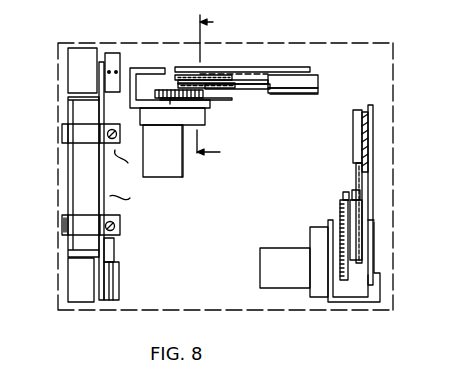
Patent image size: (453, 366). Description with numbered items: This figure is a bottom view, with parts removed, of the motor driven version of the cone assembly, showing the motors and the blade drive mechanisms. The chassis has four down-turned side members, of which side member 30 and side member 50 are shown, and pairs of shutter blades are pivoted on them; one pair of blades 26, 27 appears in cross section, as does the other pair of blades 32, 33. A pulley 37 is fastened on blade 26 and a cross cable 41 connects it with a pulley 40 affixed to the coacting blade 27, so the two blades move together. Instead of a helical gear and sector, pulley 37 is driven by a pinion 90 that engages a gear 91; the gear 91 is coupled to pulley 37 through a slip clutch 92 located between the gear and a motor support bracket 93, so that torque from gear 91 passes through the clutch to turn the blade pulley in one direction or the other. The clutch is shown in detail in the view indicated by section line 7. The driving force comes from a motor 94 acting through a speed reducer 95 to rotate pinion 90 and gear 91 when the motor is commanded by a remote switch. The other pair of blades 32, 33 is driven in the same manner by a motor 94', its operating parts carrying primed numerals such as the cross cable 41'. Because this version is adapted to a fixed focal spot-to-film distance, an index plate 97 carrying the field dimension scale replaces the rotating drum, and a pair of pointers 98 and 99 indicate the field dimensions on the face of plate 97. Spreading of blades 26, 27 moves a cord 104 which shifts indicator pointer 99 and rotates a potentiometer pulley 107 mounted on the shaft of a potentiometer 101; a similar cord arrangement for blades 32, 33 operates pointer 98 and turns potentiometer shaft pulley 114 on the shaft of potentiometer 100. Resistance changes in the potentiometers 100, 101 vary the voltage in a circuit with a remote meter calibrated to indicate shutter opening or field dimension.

The potentiometer 100 is at (78, 47).
The potentiometer shaft pulley 114 is at (112, 52).
The motor support bracket 93 is at (143, 67).
The section line 7- 7 is at (216, 87).
The shutter blade 26 is at (205, 67).
The side member 30 is at (270, 66).
The shutter blade 27 is at (318, 78).
The pulley 40 is at (318, 90).
The pulley 37 is at (236, 88).
The cross cable 41 is at (295, 107).
The pinion 90 is at (168, 75).
The gear 91 is at (228, 98).
The slip clutch 92 is at (205, 112).
The pointer 98 is at (62, 133).
The index plate 97 is at (68, 180).
The pointer 99 is at (62, 225).
The potentiometer 101 is at (68, 278).
The cord 104 is at (114, 246).
The potentiometer pulley 107 is at (119, 279).
The speed reducer 95 is at (181, 135).
The motor 94 is at (169, 168).
The shutter blade 33 is at (373, 123).
The side member 50 is at (373, 172).
The cross cable 41' is at (393, 213).
The motor 94' is at (294, 256).
The shutter blade 32 is at (340, 232).